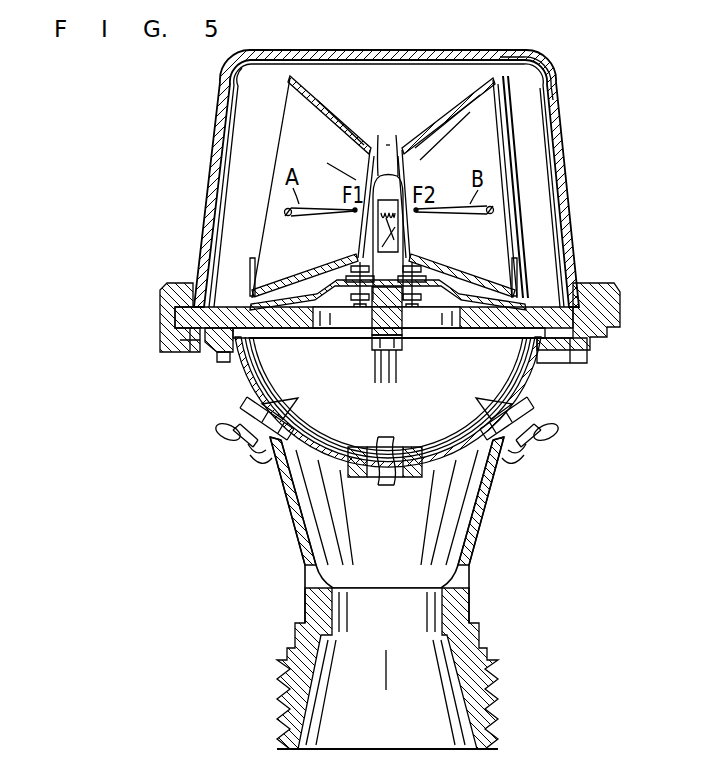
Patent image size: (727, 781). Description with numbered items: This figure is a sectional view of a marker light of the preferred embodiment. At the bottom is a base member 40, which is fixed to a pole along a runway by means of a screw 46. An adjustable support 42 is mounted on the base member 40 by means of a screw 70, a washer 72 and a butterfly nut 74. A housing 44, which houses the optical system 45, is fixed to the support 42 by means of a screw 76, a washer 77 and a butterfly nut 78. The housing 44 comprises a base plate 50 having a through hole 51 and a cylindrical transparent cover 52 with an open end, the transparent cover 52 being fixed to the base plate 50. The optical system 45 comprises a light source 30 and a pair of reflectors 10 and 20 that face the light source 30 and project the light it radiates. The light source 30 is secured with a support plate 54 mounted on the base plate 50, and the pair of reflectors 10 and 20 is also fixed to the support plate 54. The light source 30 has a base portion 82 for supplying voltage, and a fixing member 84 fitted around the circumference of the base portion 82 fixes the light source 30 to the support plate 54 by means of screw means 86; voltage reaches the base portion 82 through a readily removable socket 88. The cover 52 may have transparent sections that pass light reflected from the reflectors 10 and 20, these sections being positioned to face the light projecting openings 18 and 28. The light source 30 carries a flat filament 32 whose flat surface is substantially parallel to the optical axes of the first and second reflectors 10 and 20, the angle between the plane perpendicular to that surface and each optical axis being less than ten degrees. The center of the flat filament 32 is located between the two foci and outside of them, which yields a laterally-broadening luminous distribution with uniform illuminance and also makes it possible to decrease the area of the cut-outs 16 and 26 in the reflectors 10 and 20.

The first reflector 10 is at (322, 108).
The cut-out 16 is at (383, 158).
The light projecting opening 18 is at (276, 168).
The second reflector 20 is at (467, 123).
The cut-out 26 is at (401, 157).
The light projecting opening 28 is at (511, 183).
The light source 30 is at (403, 240).
The flat filament 32 is at (395, 183).
The base member 40 is at (480, 563).
The adjustable support 42 is at (444, 457).
The housing 44 is at (214, 171).
The optical system 45 is at (390, 110).
The screw 46 is at (282, 711).
The base plate 50 is at (596, 337).
The through hole 51 is at (433, 320).
The transparent cover 52 is at (506, 56).
The support plate 54 is at (336, 312).
The screw 70 is at (238, 446).
The washer 72 is at (272, 456).
The butterfly nut 74 is at (256, 463).
The screw 76 is at (240, 388).
The washer 77 is at (227, 358).
The butterfly nut 78 is at (232, 371).
The base portion 82 is at (370, 338).
The fixing member 84 is at (357, 271).
The screw means 86 is at (447, 274).
The socket 88 is at (401, 350).